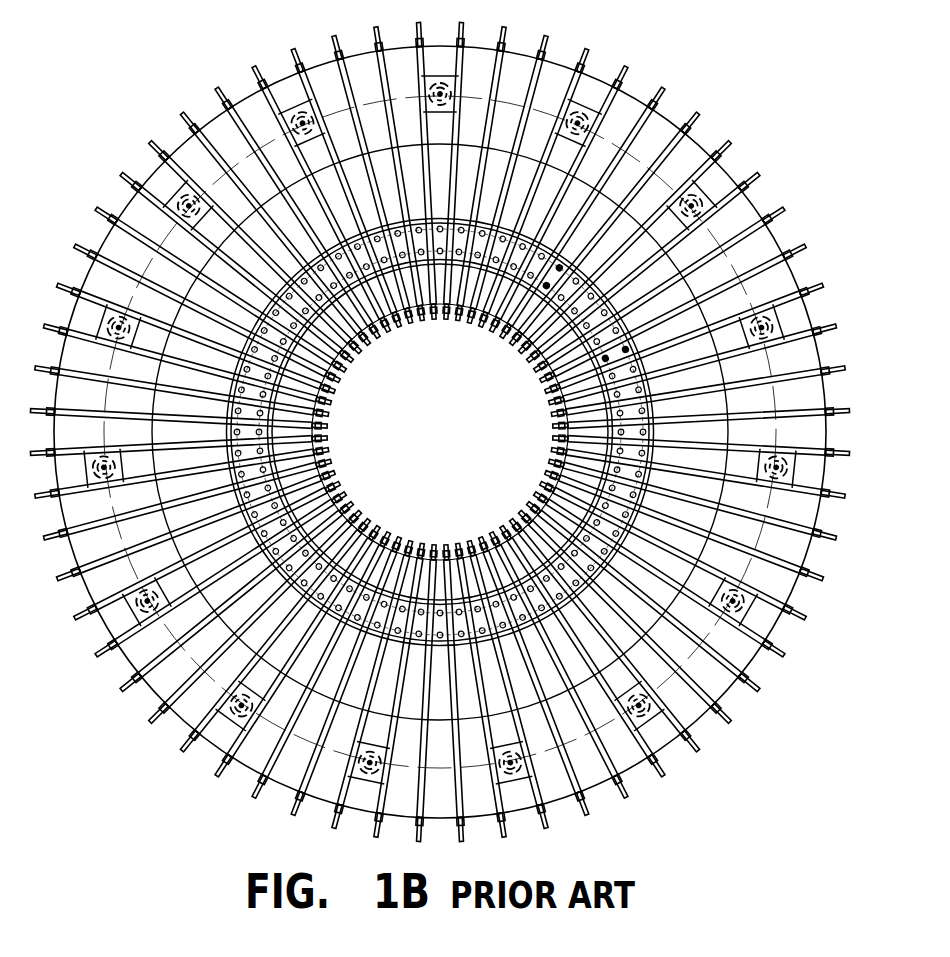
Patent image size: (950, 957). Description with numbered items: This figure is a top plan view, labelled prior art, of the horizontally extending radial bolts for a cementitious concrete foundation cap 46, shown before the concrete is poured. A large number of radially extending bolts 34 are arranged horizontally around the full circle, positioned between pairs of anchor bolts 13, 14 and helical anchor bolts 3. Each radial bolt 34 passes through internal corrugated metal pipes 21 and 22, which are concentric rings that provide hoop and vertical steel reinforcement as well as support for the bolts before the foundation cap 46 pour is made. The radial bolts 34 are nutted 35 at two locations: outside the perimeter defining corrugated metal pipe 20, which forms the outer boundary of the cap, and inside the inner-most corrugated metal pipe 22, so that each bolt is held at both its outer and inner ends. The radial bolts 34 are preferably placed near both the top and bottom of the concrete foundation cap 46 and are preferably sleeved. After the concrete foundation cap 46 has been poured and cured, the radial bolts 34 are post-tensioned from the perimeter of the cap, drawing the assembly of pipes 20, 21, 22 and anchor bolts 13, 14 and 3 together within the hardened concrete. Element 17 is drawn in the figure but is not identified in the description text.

The helical anchor bolt 3 is at (713, 195).
The anchor bolt 13 is at (514, 333).
The anchor bolt 14 is at (652, 128).
The fan unit 17 is at (593, 115).
The perimeter defining corrugated metal pipe 20 is at (762, 208).
The internal corrugated metal pipe 21 is at (628, 349).
The inner-most corrugated metal pipe 22 is at (607, 359).
The radial bolt 34 is at (593, 193).
The nut 35 is at (696, 125).
The concrete foundation cap 46 is at (687, 663).